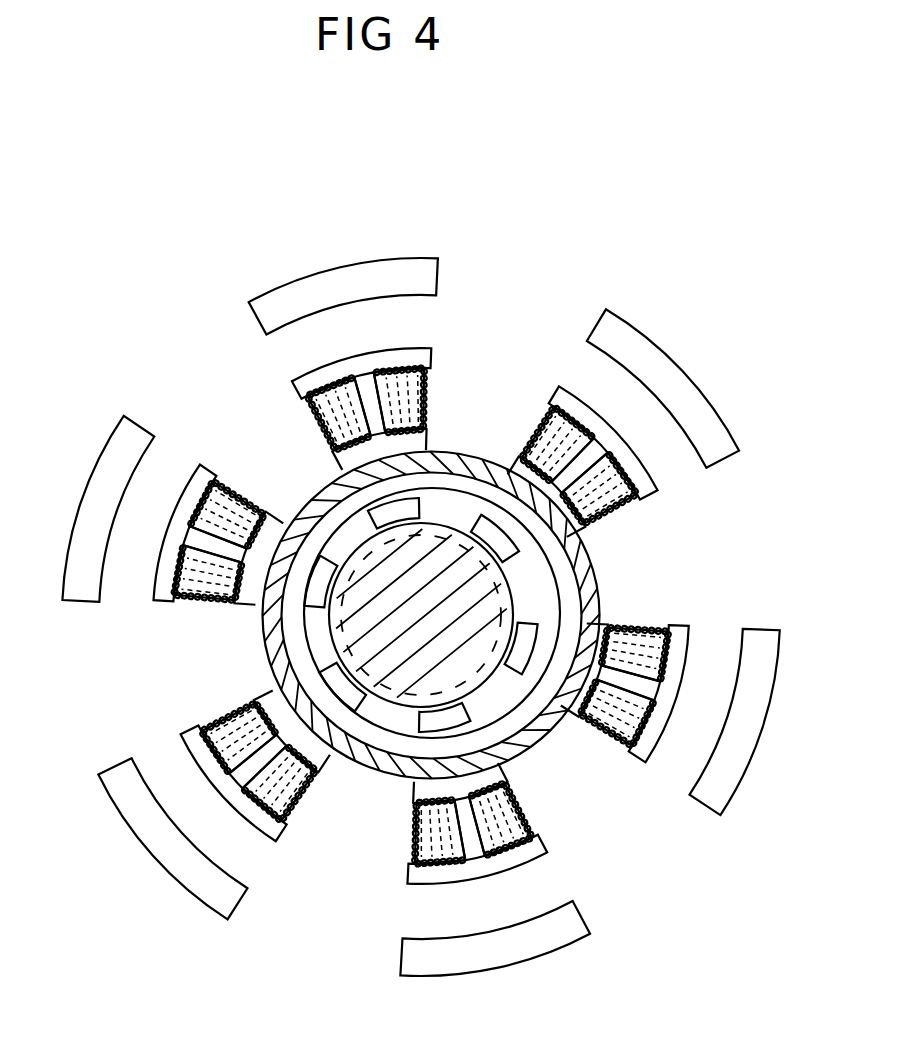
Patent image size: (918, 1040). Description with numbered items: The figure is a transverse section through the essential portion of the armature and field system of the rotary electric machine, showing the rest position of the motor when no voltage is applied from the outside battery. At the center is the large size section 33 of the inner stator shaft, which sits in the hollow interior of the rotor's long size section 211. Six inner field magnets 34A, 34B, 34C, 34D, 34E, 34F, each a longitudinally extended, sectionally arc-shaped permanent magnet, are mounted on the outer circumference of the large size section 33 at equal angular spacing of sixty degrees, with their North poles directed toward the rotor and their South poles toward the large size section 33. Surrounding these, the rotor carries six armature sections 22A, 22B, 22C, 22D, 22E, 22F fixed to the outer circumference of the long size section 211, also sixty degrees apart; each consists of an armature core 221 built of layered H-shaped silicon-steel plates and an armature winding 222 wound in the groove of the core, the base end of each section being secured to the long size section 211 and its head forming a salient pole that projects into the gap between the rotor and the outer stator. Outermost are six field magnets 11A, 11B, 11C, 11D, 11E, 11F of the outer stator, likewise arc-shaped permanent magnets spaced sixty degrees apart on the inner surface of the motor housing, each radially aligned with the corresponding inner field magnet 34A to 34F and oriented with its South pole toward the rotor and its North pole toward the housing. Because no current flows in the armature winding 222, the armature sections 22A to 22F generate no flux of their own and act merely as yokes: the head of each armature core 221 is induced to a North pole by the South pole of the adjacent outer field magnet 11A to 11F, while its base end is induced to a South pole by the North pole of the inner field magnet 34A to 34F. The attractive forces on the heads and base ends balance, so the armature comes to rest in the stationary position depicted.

The field magnet 11A is at (382, 265).
The field magnet 11B is at (713, 420).
The field magnet 11C is at (745, 632).
The field magnet 11D is at (562, 937).
The field magnet 11E is at (210, 905).
The field magnet 11F is at (80, 590).
The armature section 22A is at (343, 354).
The armature section 22B is at (558, 378).
The armature section 22C is at (700, 607).
The armature section 22D is at (572, 846).
The armature section 22E is at (292, 847).
The armature section 22F is at (163, 623).
The long size section 211 is at (582, 582).
The armature core 221 is at (363, 369).
The armature winding 222 is at (287, 373).
The large size section 33 is at (468, 647).
The field magnet 34A is at (425, 518).
The field magnet 34B is at (510, 558).
The field magnet 34C is at (520, 672).
The field magnet 34D is at (413, 717).
The field magnet 34E is at (320, 668).
The field magnet 34F is at (333, 563).